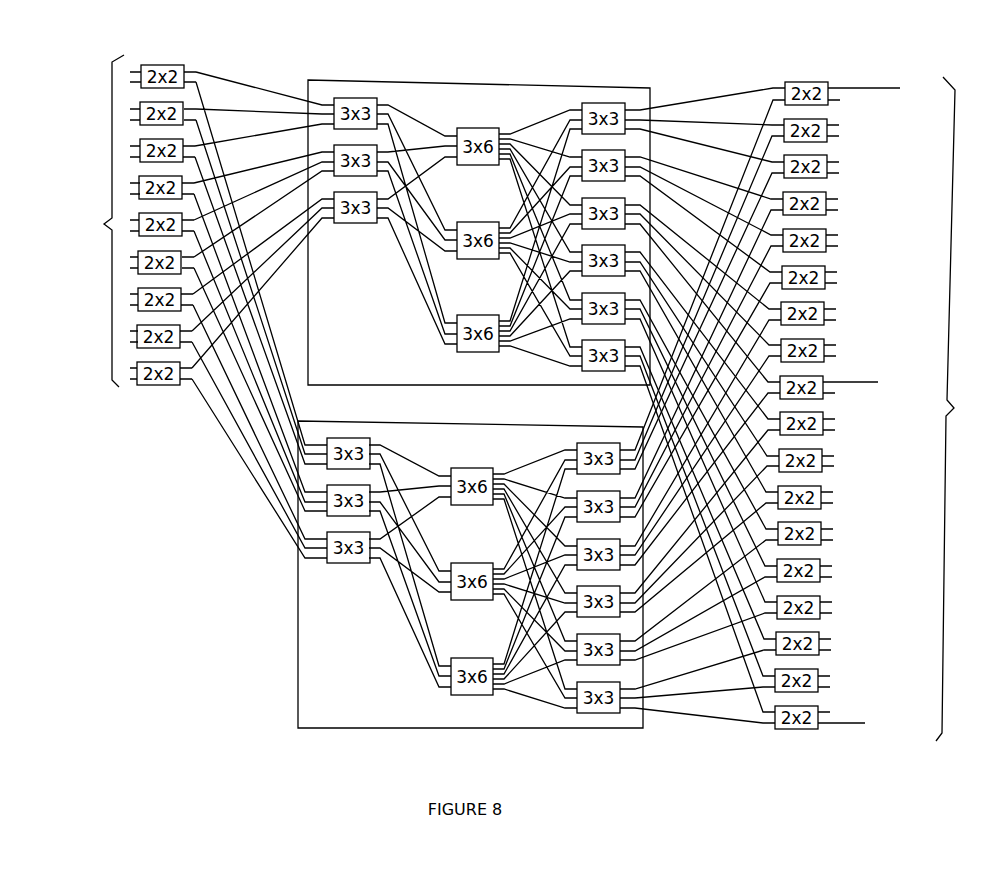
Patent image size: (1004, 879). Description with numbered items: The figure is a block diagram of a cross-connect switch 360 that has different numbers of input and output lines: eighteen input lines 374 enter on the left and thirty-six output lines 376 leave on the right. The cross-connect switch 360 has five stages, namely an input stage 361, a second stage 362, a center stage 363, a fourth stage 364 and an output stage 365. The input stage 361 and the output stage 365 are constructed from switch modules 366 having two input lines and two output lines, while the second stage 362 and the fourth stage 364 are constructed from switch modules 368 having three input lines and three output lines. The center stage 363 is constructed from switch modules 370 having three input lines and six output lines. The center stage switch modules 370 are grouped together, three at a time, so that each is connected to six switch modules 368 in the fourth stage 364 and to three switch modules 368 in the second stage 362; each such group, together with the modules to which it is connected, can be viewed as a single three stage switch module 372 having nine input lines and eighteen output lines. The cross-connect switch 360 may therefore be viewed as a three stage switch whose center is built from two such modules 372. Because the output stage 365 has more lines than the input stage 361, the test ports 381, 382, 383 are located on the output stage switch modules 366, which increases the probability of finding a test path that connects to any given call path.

The cross-connect switch 360 is at (765, 790).
The input stage 361 is at (167, 50).
The second stage 362 is at (357, 57).
The center stage 363 is at (481, 64).
The fourth stage 364 is at (607, 62).
The output stage 365 is at (808, 62).
The switch module 366 is at (803, 729).
The switch module 368 is at (336, 563).
The switch module 370 is at (465, 352).
The three stage switch module 372 is at (635, 728).
The input lines 374 is at (93, 221).
The output lines 376 is at (966, 409).
The test port 381 is at (875, 100).
The test port 382 is at (853, 393).
The test port 383 is at (854, 743).